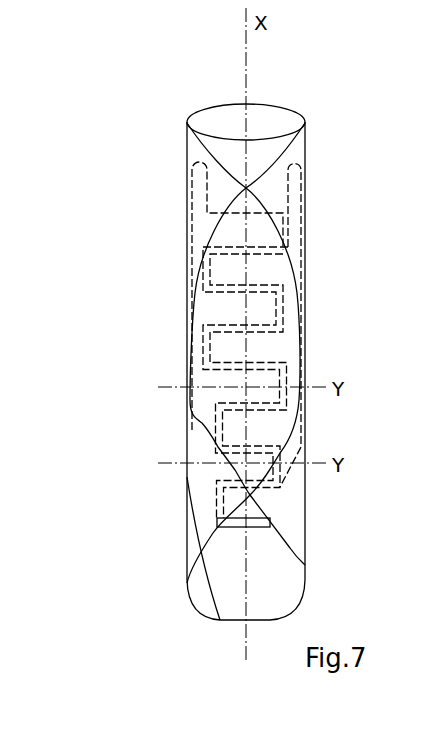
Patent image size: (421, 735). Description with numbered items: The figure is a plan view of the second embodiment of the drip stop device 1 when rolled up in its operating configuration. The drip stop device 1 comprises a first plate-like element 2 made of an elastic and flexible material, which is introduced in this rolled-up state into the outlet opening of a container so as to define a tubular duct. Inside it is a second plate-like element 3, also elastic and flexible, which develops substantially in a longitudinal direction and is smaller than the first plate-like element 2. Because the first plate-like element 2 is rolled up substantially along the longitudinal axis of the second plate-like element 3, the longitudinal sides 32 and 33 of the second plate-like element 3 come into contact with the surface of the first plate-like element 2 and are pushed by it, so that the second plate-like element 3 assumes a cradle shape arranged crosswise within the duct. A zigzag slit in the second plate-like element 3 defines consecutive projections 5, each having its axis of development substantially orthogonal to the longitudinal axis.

The drip stop device 1 is at (94, 80).
The first plate-like element 2 is at (283, 122).
The second plate-like element 3 is at (218, 570).
The projections 5 is at (238, 456).
The longitudinal side 32 is at (191, 200).
The longitudinal side 33 is at (302, 190).